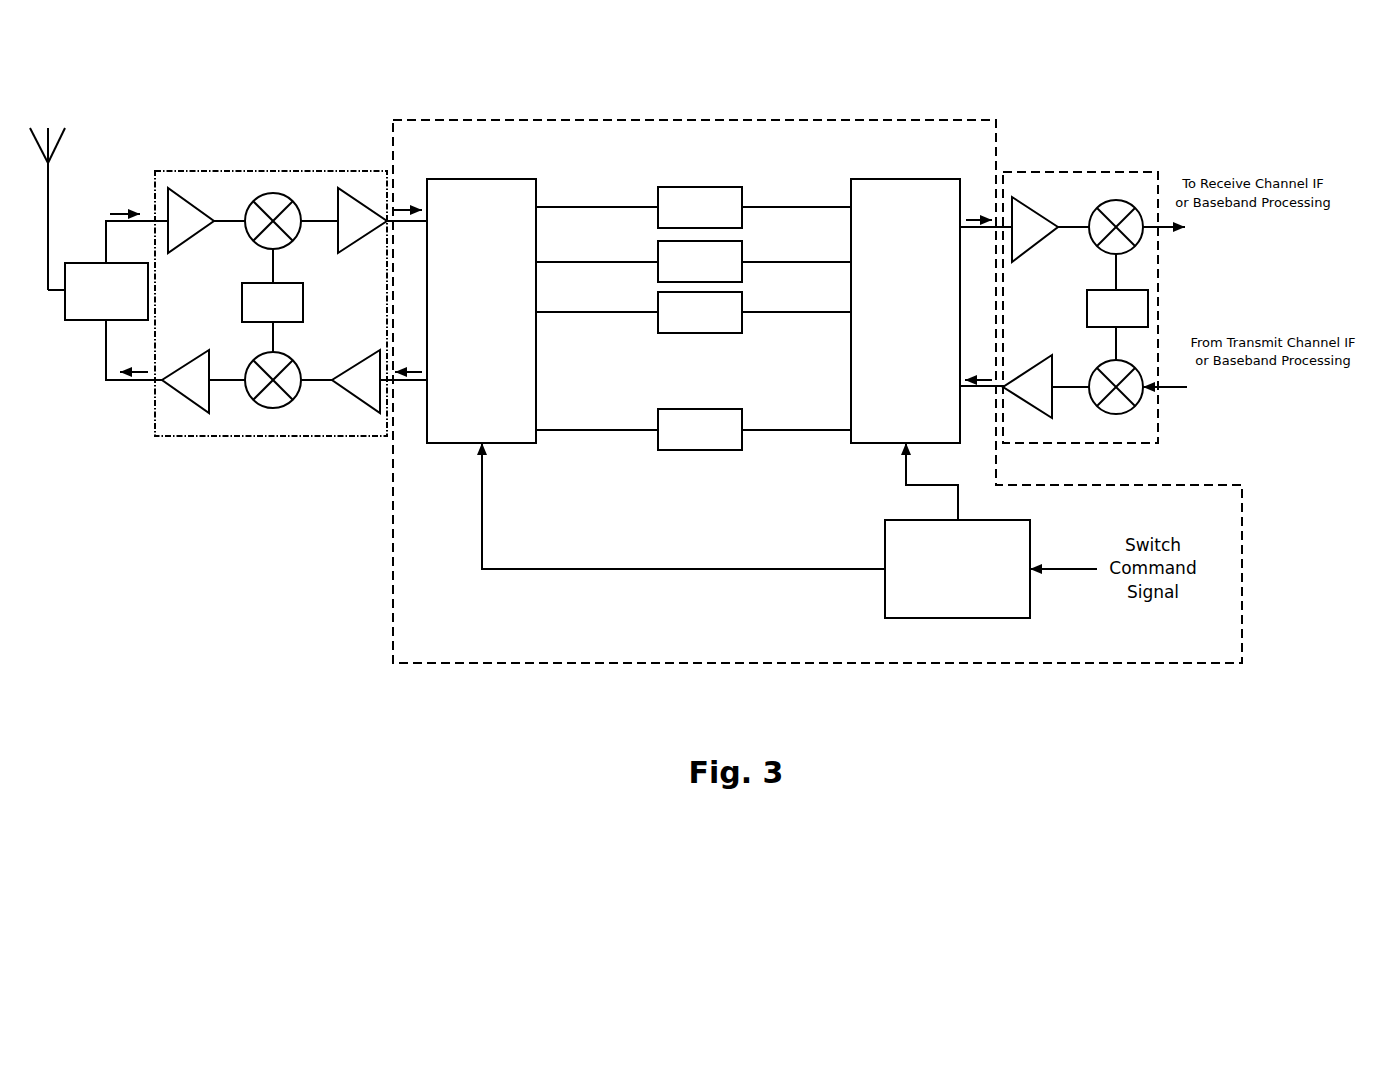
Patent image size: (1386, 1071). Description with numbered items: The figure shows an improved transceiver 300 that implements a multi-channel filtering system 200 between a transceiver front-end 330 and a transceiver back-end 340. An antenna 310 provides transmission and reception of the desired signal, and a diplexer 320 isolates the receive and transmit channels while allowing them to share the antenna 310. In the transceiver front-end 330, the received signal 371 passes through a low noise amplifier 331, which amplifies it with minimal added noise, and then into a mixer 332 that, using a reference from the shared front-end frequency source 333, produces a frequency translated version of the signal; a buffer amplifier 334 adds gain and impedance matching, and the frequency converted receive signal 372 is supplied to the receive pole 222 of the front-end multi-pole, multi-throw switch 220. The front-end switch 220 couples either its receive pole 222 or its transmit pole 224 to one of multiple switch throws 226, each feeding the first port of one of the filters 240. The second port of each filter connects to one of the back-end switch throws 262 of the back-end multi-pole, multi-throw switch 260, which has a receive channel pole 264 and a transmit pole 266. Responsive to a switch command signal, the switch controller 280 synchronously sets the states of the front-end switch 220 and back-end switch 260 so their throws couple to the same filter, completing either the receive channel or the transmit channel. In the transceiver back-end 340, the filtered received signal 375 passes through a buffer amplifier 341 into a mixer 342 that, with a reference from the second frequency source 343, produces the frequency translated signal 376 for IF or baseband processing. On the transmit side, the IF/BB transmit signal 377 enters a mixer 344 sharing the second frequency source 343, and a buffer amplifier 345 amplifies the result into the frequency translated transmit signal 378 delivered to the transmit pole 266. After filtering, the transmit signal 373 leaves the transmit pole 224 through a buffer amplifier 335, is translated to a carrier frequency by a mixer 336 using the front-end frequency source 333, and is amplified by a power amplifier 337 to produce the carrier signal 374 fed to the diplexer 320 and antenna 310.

The improved transceiver 300 is at (970, 66).
The multi-channel filtering system 200 is at (817, 380).
The antenna 310 is at (63, 209).
The diplexer 320 is at (104, 281).
The transceiver front-end 330 is at (267, 293).
The low noise amplifier 331 is at (206, 219).
The mixer 332 is at (291, 211).
The shared front-end frequency source 333 is at (291, 300).
The buffer amplifier 334 is at (382, 216).
The buffer amplifier 335 is at (378, 383).
The mixer 336 is at (288, 392).
The power amplifier 337 is at (201, 383).
The received signal 371 is at (125, 202).
The frequency converted receive signal 372 is at (407, 199).
The transmit signal 373 is at (407, 360).
The carrier signal 374 is at (131, 358).
The front-end multi-pole, multi-throw switch 220 is at (481, 301).
The receive pole 222 is at (423, 211).
The transmit pole 224 is at (420, 373).
The switch throws 226 is at (597, 305).
The filters 240 is at (717, 312).
The back-end switch throws 262 is at (796, 305).
The back-end multi-pole, multi-throw switch 260 is at (905, 301).
The receive channel pole 264 is at (969, 223).
The transmit pole 266 is at (965, 383).
The switch controller 280 is at (789, 530).
The transceiver back-end 340 is at (1080, 297).
The buffer amplifier 341 is at (1050, 229).
The mixer 342 is at (1116, 217).
The second frequency source 343 is at (1099, 307).
The mixer 344 is at (1116, 401).
The buffer amplifier 345 is at (1046, 398).
The filtered received signal 375 is at (977, 208).
The frequency translated signal 376 is at (1180, 227).
The IF/BB transmit signal 377 is at (1180, 387).
The frequency translated transmit signal 378 is at (977, 367).